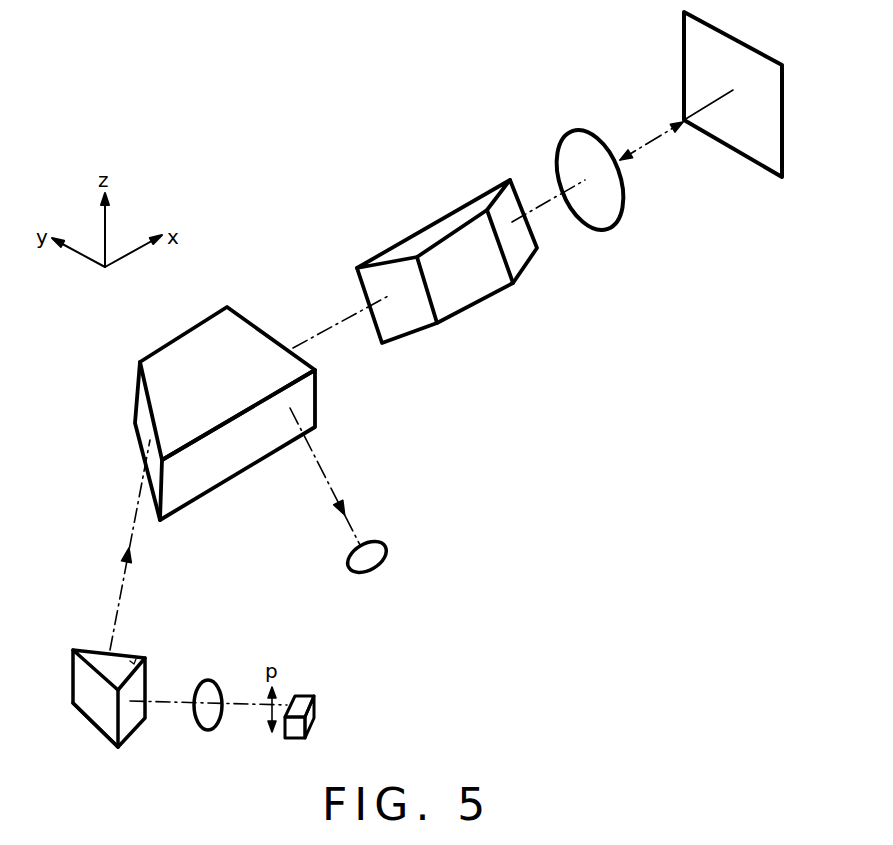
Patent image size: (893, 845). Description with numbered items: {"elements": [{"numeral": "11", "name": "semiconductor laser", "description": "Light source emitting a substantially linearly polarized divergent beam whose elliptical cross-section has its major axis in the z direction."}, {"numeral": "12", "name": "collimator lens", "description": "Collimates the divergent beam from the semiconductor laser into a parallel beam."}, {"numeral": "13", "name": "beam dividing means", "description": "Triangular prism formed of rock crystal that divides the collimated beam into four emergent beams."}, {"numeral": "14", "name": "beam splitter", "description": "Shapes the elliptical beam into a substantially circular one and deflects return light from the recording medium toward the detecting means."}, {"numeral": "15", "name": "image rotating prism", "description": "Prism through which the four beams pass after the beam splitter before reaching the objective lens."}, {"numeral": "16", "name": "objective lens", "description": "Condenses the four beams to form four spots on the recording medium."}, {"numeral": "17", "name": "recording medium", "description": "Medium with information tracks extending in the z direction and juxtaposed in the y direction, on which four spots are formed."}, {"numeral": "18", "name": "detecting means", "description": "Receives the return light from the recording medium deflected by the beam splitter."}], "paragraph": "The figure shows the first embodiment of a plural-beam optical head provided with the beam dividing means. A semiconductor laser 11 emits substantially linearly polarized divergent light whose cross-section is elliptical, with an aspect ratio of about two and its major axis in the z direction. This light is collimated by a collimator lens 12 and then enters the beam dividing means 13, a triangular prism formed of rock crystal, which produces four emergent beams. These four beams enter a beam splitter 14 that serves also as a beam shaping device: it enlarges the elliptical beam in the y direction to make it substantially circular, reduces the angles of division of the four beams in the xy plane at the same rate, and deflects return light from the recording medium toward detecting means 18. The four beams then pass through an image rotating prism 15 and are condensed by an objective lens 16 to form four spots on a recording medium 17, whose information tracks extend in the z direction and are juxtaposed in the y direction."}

The light source 11 is at (307, 692).
The lens 12 is at (212, 678).
The prism 13 is at (88, 647).
The crystal block 14 is at (248, 468).
The crystal block 15 is at (497, 292).
The lens 16 is at (622, 217).
The screen 17 is at (750, 163).
The detector 18 is at (383, 543).